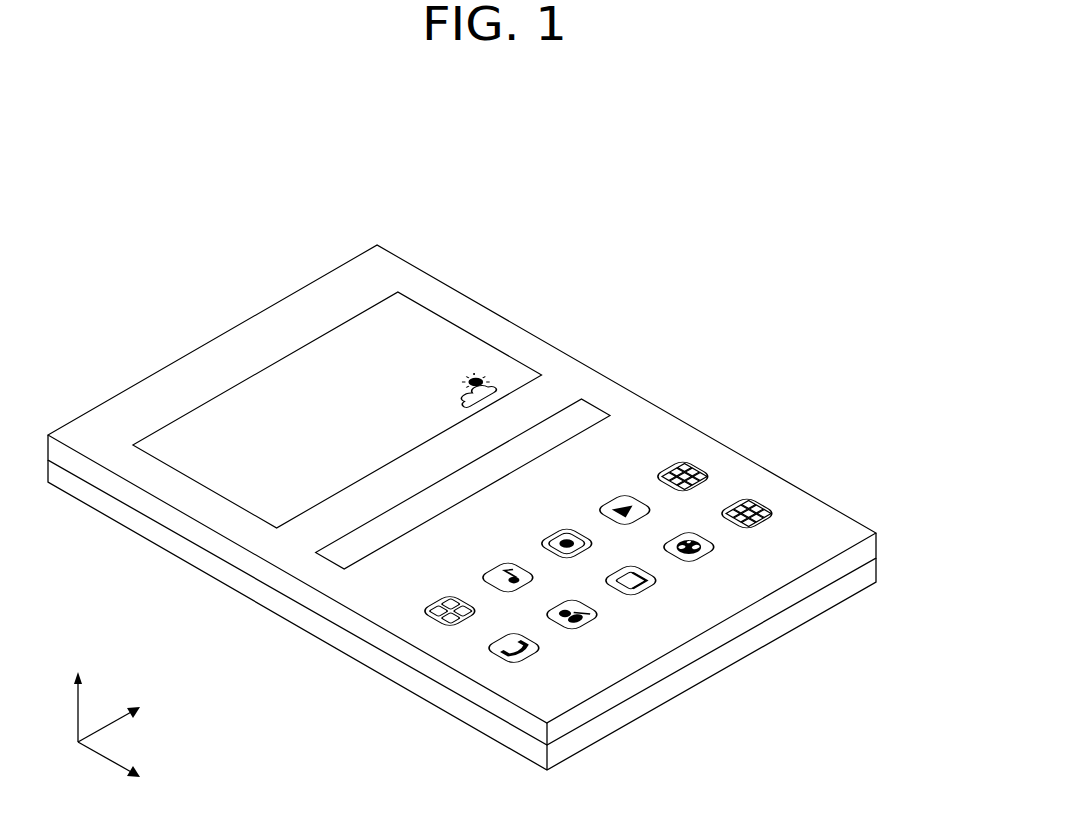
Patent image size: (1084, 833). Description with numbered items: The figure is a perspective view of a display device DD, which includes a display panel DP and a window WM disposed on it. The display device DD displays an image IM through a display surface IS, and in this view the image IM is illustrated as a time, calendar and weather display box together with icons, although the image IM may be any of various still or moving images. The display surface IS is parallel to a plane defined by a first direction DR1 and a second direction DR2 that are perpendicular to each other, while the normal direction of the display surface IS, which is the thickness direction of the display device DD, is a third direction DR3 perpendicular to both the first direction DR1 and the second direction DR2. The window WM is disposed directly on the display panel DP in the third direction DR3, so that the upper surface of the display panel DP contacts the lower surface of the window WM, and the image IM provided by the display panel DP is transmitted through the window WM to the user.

The display device DD is at (663, 266).
The window WM is at (867, 550).
The display panel DP is at (867, 573).
The display surface IS is at (254, 347).
The image IM is at (469, 333).
The first direction DR1 is at (131, 767).
The second direction DR2 is at (131, 716).
The third direction DR3 is at (79, 692).